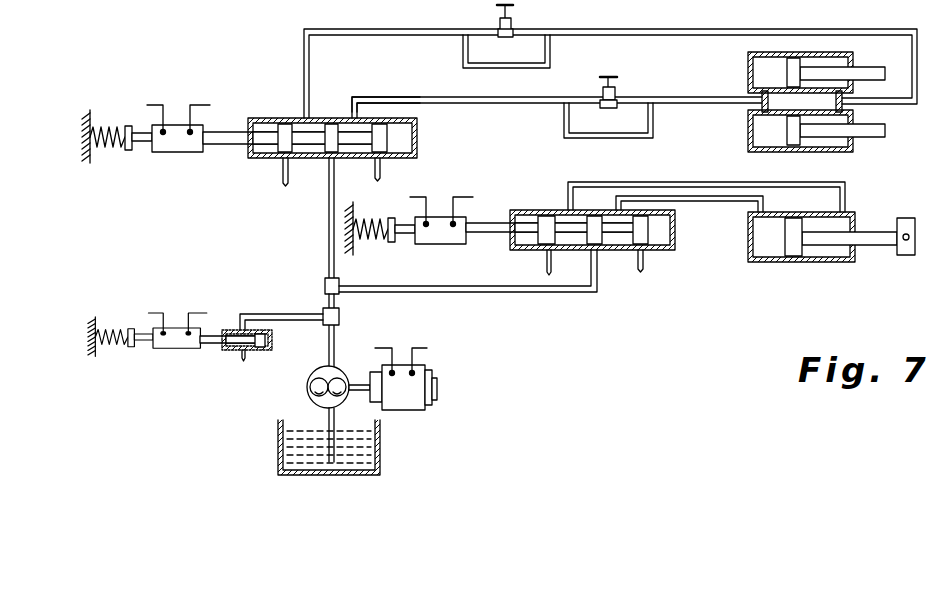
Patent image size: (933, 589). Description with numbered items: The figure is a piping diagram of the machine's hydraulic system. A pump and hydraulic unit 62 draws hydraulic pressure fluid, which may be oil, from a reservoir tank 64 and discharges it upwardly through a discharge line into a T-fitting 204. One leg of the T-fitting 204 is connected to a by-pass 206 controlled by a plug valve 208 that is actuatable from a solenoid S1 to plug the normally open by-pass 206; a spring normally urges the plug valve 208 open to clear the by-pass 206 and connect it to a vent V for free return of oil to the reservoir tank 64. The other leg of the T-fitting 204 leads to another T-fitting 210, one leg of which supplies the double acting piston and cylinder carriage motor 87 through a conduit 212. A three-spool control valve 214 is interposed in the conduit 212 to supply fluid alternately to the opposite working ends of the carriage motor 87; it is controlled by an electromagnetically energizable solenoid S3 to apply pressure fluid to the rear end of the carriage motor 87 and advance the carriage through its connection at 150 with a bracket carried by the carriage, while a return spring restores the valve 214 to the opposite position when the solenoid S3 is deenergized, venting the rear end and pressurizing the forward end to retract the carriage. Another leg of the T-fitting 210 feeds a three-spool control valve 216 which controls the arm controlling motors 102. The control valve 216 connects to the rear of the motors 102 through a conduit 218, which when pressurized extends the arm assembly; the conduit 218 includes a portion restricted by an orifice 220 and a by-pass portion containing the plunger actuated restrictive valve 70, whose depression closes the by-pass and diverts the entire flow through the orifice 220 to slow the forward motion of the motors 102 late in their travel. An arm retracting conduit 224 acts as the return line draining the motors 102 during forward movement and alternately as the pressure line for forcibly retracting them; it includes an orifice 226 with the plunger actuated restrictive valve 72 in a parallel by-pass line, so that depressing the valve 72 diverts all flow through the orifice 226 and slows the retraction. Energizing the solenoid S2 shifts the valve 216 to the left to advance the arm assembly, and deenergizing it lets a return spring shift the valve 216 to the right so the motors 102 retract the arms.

The pump and hydraulic unit 62 is at (360, 380).
The reservoir tank 64 is at (381, 447).
The plunger actuated restrictive valve 70 is at (606, 78).
The plunger actuated restrictive valve 72 is at (500, 6).
The carriage motor 87 is at (815, 262).
The arm controlling motors 102 is at (862, 69).
The connection 150 is at (906, 255).
The T-fitting 204 is at (340, 314).
The by-pass 206 is at (272, 297).
The plug valve 208 is at (215, 329).
The T-fitting 210 is at (326, 283).
The conduit 212 is at (590, 295).
The three-spool control valve 214 is at (597, 213).
The three-spool control valve 216 is at (333, 118).
The conduit 218 is at (727, 106).
The orifice 220 is at (608, 128).
The arm retracting conduit 224 is at (675, 29).
The orifice 226 is at (505, 62).
The solenoid S1 is at (177, 328).
The solenoid S2 is at (180, 124).
The solenoid S3 is at (445, 216).
The vent V is at (283, 174).